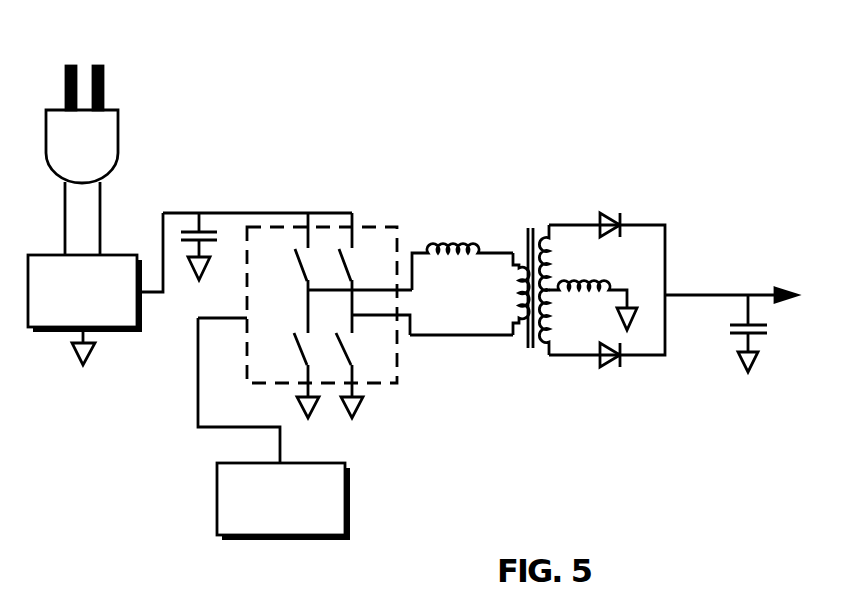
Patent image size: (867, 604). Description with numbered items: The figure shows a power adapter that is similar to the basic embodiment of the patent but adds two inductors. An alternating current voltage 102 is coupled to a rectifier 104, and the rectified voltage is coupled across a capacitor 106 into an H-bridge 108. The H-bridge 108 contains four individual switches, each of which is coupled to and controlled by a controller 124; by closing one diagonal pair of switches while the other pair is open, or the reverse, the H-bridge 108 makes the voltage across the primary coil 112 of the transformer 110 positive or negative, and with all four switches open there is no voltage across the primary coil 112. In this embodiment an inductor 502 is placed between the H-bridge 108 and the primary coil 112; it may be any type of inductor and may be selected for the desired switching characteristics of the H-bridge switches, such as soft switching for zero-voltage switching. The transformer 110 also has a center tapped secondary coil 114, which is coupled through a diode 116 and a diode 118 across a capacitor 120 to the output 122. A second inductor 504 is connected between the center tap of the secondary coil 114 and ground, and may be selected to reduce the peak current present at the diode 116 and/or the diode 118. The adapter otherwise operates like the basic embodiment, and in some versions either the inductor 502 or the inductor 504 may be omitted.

The alternating current (AC) voltage 102 is at (127, 103).
The rectifier 104 is at (95, 289).
The capacitor 106 is at (182, 225).
The H-bridge 108 is at (387, 390).
The transformer 110 is at (522, 230).
The primary coil 112 is at (505, 242).
The secondary coil 114 is at (538, 213).
The diode 116 is at (618, 205).
The diode 118 is at (600, 378).
The capacitor 120 is at (723, 340).
The output 122 is at (745, 277).
The controller 124 is at (274, 429).
The inductor 502 is at (463, 280).
The inductor 504 is at (590, 315).